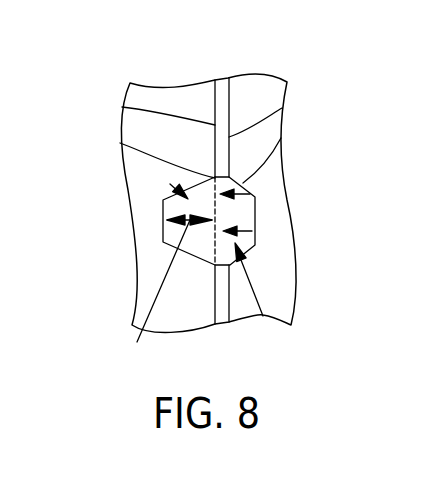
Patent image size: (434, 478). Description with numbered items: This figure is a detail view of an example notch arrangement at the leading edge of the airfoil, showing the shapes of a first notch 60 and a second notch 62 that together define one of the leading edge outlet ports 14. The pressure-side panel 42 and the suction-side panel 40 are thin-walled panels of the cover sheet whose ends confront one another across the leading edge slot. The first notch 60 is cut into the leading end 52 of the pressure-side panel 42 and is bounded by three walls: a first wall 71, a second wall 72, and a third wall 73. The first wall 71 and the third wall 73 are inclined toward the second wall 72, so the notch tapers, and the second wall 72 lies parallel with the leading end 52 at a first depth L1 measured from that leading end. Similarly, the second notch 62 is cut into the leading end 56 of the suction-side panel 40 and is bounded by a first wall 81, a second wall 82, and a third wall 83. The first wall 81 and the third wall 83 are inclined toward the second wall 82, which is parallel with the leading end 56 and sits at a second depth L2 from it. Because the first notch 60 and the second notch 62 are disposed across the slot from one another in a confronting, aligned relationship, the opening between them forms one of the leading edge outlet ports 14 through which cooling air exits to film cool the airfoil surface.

The suction-side panel 40 is at (258, 80).
The pressure-side panel 42 is at (186, 100).
The leading edge outlet ports 14 is at (263, 317).
The leading end 52 is at (122, 107).
The leading end 56 is at (282, 108).
The first wall 71 is at (120, 143).
The first wall 81 is at (281, 138).
The first notch 60 is at (170, 184).
The second wall 72 is at (163, 213).
The third wall 73 is at (163, 243).
The second wall 82 is at (256, 218).
The second notch 62 is at (255, 246).
The third wall 83 is at (250, 264).
The first depth L1 is at (160, 296).
The second depth L2 is at (250, 194).